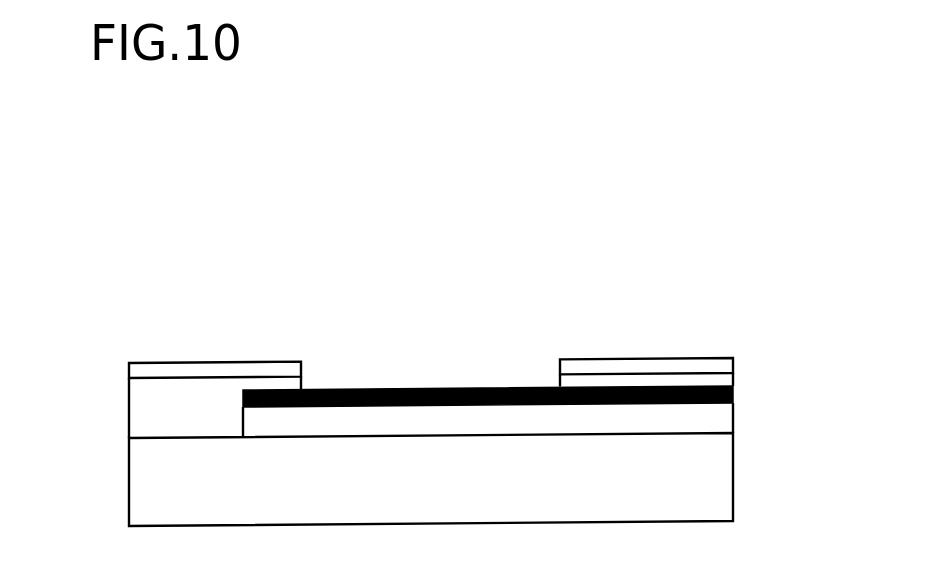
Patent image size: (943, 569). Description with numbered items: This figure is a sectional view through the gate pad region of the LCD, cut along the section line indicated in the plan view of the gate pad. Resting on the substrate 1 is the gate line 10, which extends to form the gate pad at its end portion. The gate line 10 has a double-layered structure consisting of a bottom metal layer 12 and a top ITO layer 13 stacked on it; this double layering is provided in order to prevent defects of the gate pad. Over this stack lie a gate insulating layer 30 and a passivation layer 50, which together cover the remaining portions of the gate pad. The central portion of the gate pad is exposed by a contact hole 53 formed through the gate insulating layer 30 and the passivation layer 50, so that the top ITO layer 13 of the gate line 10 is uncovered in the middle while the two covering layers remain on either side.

The substrate 1 is at (728, 491).
The gate line 10 is at (571, 414).
The bottom metal layer 12 is at (733, 428).
The top ITO layer 13 is at (733, 401).
The gate insulating layer 30 is at (147, 409).
The passivation layer 50 is at (147, 369).
The contact hole 53 is at (445, 345).